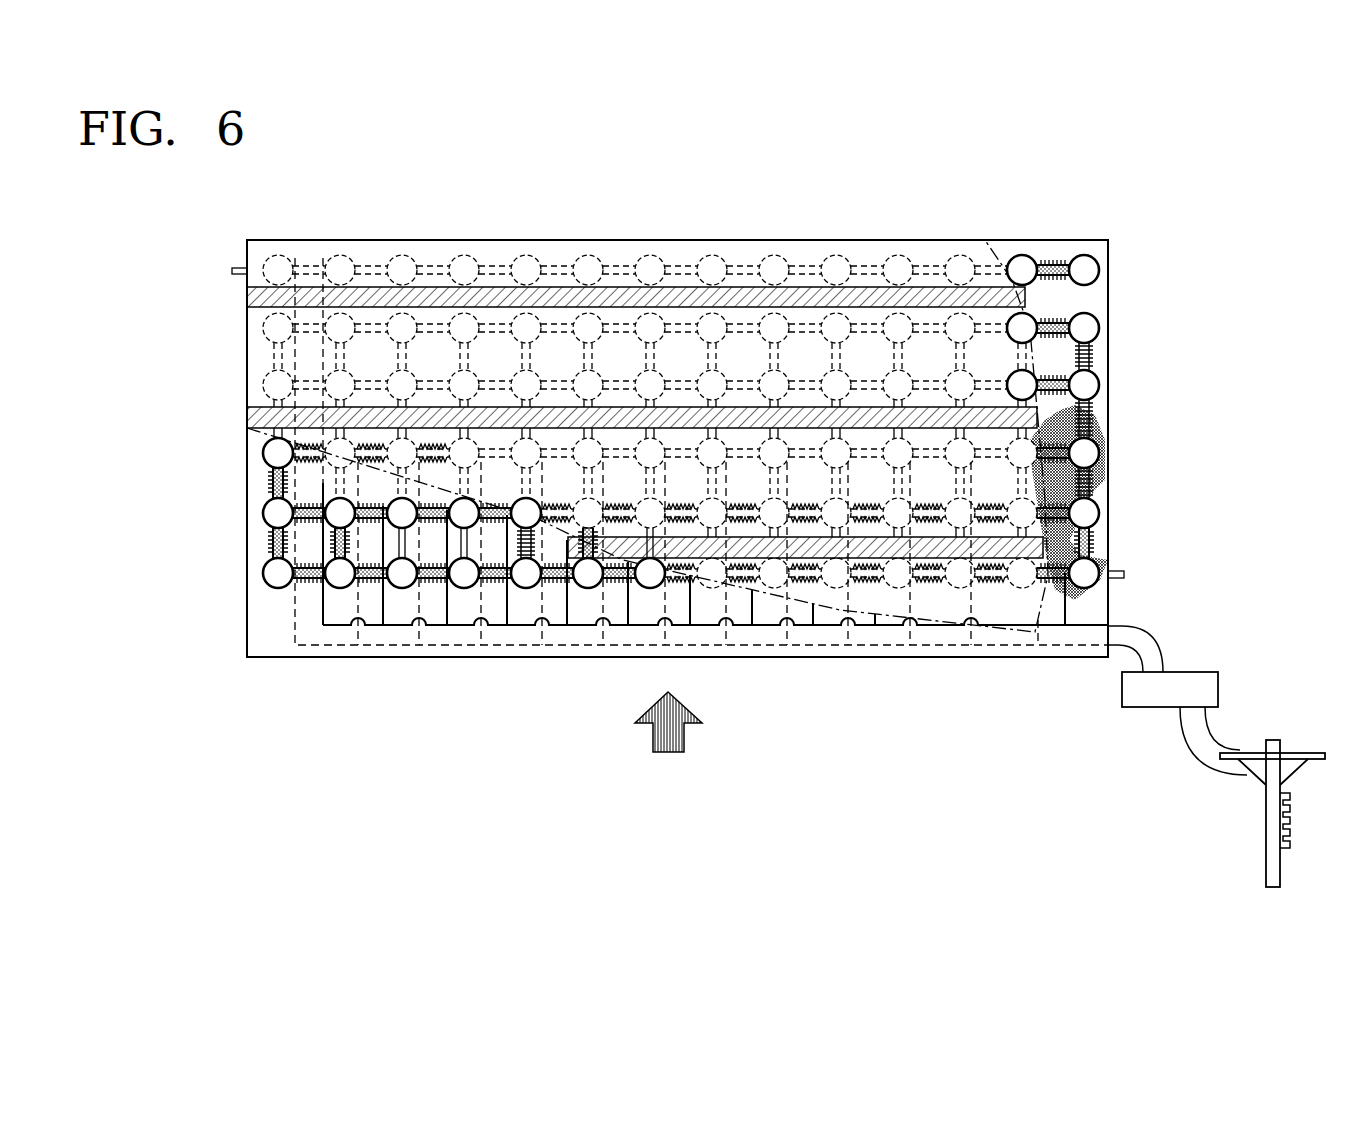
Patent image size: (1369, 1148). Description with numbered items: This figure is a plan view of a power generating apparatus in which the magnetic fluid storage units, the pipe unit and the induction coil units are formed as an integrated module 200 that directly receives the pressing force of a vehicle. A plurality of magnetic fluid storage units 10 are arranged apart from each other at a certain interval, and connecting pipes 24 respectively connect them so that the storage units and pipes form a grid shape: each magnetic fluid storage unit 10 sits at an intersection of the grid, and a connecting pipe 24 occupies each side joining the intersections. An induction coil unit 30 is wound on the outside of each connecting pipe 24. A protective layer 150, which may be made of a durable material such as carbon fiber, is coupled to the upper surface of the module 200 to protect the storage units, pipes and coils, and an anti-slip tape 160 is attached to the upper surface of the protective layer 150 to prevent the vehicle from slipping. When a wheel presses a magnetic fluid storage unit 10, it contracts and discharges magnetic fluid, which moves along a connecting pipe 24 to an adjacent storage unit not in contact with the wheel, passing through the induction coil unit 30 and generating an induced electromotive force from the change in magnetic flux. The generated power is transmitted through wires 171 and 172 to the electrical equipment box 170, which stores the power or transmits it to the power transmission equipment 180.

The integrated module 200 is at (1083, 222).
The protective layer 150 is at (803, 250).
The anti-slip tape 160 is at (680, 296).
The magnetic fluid storage unit 10 is at (463, 256).
The connecting pipe 24 is at (1050, 318).
The induction coil unit 30 is at (1093, 355).
The wire 171 is at (762, 627).
The wire 172 is at (825, 647).
The electrical equipment box 170 is at (1137, 708).
The power transmission equipment 180 is at (1255, 808).